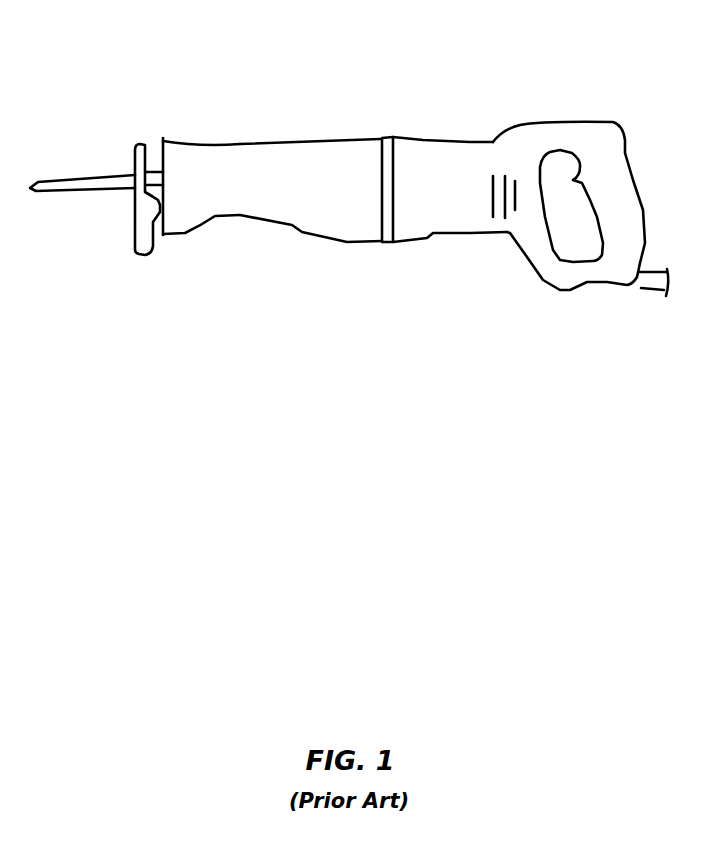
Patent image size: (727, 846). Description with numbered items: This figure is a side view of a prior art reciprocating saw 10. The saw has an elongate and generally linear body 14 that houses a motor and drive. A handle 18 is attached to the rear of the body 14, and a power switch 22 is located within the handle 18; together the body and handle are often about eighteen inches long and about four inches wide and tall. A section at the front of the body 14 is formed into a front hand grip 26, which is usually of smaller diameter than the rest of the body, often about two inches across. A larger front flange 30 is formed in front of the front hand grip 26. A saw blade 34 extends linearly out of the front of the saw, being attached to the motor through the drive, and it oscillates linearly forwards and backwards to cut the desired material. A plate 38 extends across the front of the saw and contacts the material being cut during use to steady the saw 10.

The reciprocating saw 10 is at (347, 173).
The body 14 is at (296, 207).
The handle 18 is at (618, 208).
The power switch 22 is at (567, 167).
The front hand grip 26 is at (206, 190).
The front flange 30 is at (167, 157).
The saw blade 34 is at (97, 175).
The plate 38 is at (142, 210).